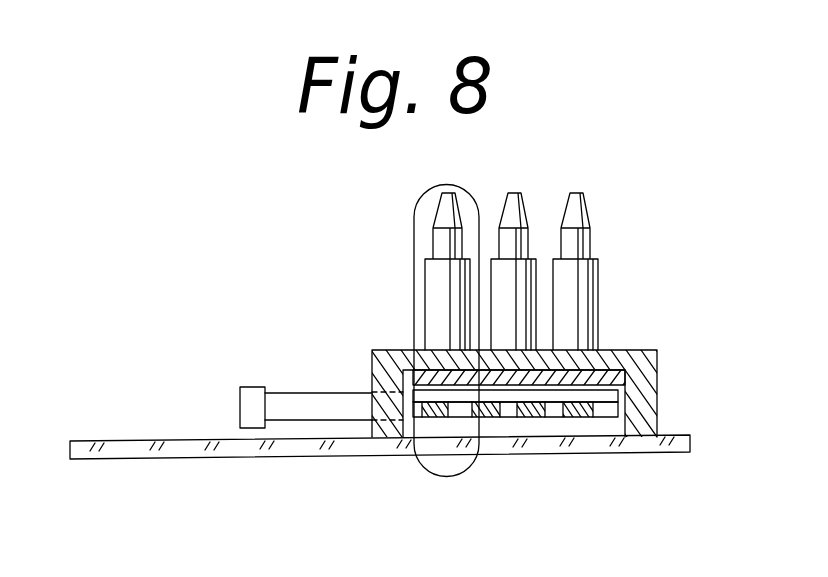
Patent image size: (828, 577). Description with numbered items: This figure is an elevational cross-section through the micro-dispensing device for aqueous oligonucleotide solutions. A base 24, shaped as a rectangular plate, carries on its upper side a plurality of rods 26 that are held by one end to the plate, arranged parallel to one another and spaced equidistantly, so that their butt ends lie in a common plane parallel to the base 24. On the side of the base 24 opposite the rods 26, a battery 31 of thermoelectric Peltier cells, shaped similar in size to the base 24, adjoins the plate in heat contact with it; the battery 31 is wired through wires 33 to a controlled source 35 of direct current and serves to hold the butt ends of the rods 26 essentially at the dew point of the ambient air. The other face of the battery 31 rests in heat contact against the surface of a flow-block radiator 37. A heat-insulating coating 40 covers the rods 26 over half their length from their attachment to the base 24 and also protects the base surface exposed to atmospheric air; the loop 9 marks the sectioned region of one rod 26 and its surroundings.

The connector pin assembly (section) 9 is at (414, 245).
The base 24 is at (370, 357).
The rods 26 is at (590, 243).
The battery of thermoelectric cells 31 is at (530, 418).
The wires 33 is at (315, 420).
The controlled source of direct-current 35 is at (251, 397).
The flow-block radiator 37 is at (90, 440).
The heat-insulating coating 40 is at (638, 347).